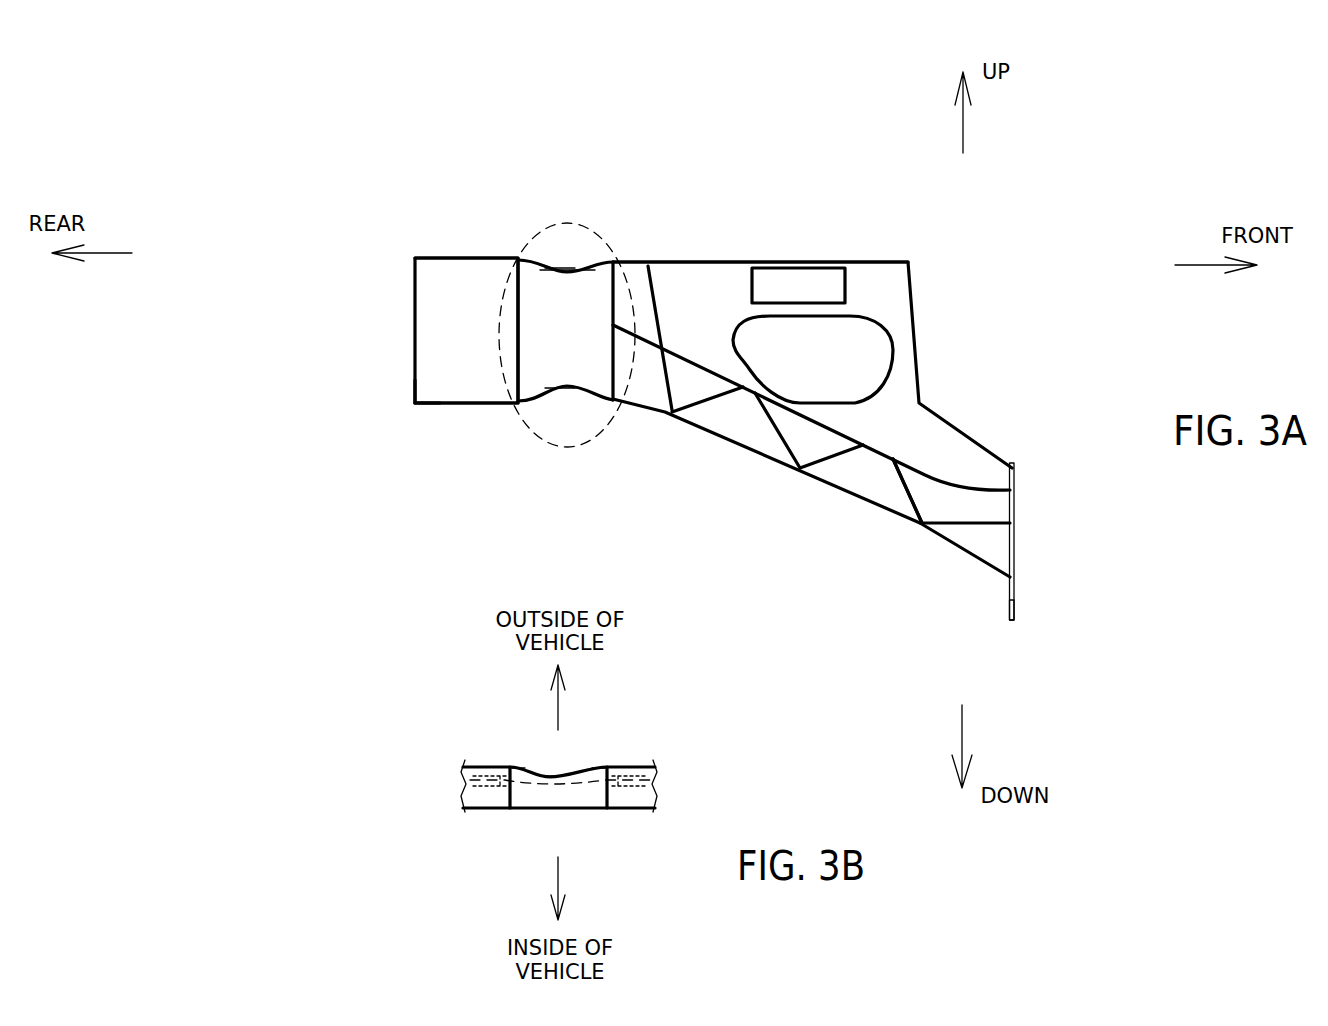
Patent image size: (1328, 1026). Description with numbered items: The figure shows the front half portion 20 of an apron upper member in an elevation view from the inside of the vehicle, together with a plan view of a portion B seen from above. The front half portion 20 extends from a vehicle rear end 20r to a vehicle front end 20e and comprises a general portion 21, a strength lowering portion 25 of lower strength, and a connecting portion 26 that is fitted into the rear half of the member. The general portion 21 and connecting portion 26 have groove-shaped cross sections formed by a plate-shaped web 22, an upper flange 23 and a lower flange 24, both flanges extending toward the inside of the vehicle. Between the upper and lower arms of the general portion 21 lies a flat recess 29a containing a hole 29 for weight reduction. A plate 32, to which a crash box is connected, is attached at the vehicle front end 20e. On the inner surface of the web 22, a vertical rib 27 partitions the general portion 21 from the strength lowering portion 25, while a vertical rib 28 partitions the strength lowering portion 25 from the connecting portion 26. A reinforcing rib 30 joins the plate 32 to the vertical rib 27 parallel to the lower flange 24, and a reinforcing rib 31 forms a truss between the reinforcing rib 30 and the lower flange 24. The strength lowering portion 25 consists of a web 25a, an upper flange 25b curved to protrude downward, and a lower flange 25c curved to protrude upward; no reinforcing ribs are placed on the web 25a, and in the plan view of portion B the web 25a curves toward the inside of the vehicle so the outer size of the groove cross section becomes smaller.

In FIG. 3A, the front half portion 20 is at (1024, 226).
In FIG. 3A, the vehicle rear end 20r is at (413, 352).
In FIG. 3A, the vehicle front end 20e is at (1027, 548).
In FIG. 3A, the general portion 21 is at (797, 495).
In FIG. 3A, the web 22 is at (437, 290).
In FIG. 3A, the upper flange 23 is at (440, 258).
In FIG. 3A, the lower flange 24 is at (462, 405).
In FIG. 3A, the strength lowering portion 25 is at (584, 229).
In FIG. 3B, the strength lowering portion 25 is at (541, 834).
In FIG. 3A, the web 25a is at (553, 313).
In FIG. 3B, the web 25a is at (548, 768).
In FIG. 3A, the upper flange 25b is at (555, 258).
In FIG. 3B, the upper flange 25b is at (532, 795).
In FIG. 3A, the lower flange 25c is at (545, 390).
In FIG. 3A, the connecting portion 26 is at (437, 415).
In FIG. 3A, the vertical rib 27 is at (645, 275).
In FIG. 3B, the vertical rib 27 is at (660, 788).
In FIG. 3A, the vertical rib 28 is at (510, 340).
In FIG. 3B, the vertical rib 28 is at (450, 790).
In FIG. 3A, the hole 29 is at (867, 360).
In FIG. 3A, the recess 29a is at (895, 395).
In FIG. 3A, the reinforcing rib 30 is at (882, 460).
In FIG. 3A, the reinforcing rib 31 is at (843, 465).
In FIG. 3A, the plate 32 is at (1018, 600).
In FIG. 3A, the portion B is at (518, 235).